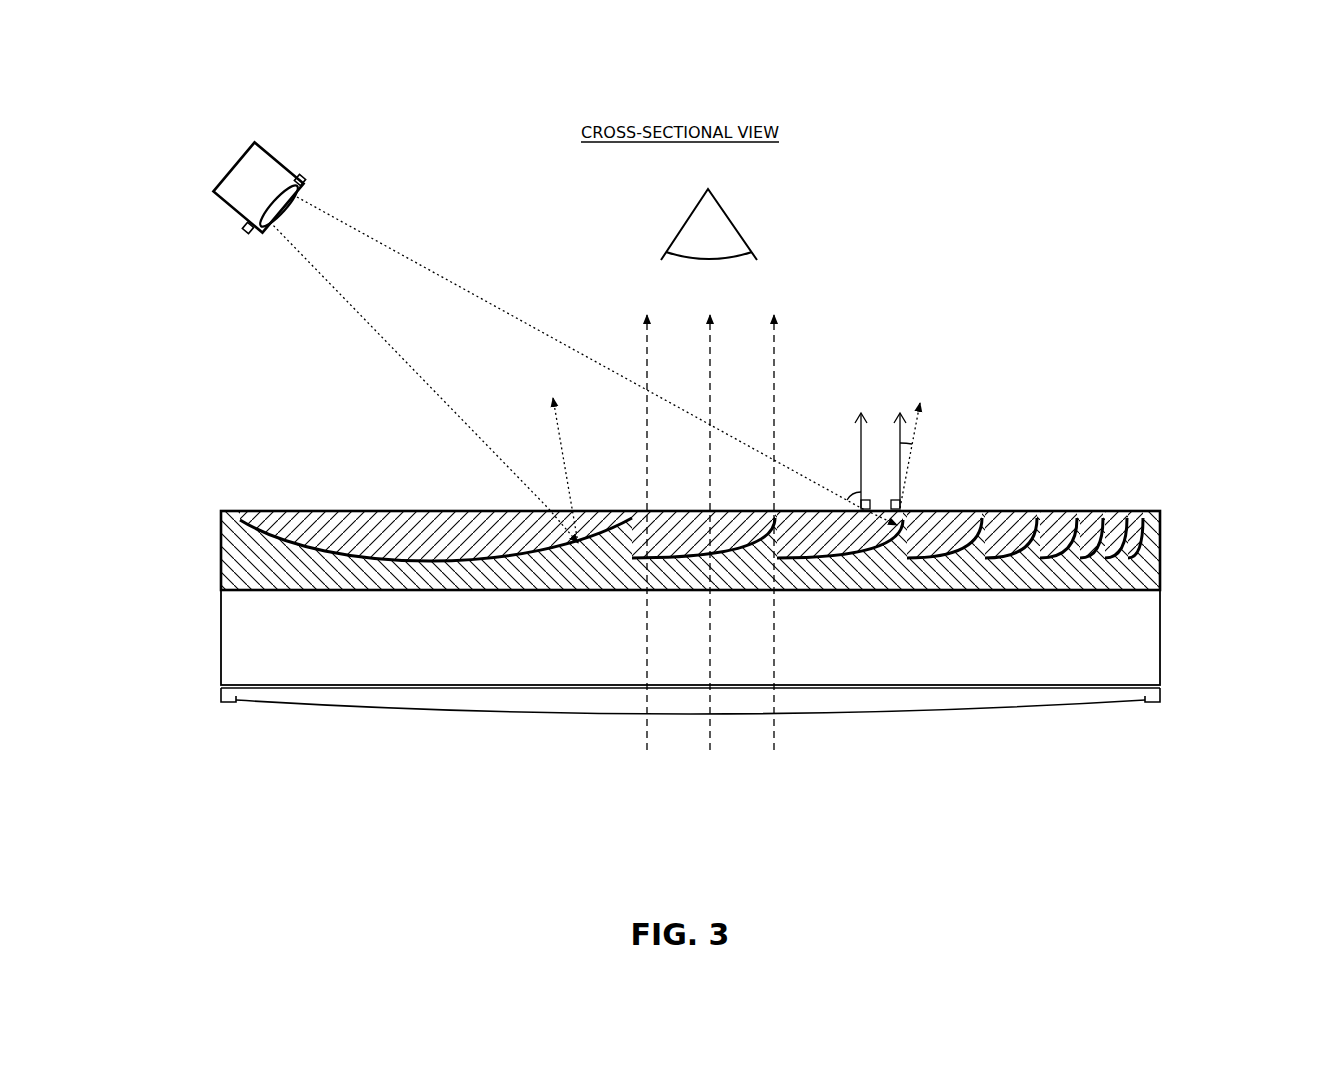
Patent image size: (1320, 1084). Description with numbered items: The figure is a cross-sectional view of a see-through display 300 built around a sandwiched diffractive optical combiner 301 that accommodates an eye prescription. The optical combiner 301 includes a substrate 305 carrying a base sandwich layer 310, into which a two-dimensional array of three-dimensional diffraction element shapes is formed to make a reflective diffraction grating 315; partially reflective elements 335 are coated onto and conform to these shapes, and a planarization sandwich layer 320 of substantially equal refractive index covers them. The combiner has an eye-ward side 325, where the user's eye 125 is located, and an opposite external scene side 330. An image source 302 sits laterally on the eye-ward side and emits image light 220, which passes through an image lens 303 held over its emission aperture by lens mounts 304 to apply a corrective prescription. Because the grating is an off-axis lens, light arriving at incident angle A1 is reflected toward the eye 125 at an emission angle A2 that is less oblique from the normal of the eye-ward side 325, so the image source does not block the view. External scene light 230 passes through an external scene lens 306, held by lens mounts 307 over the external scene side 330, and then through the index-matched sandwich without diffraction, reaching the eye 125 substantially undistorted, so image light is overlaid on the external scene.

The see-through display 300 is at (1049, 160).
The sandwiched diffractive optical combiner 301 is at (733, 577).
The image source 302 is at (237, 191).
The image lens 303 is at (300, 196).
The lens mounts 304 is at (302, 176).
The substrate 305 is at (378, 671).
The external scene lens 306 is at (428, 705).
The lens mounts 307 is at (230, 703).
The base sandwich layer 310 is at (254, 577).
The reflective diffraction grating 315 is at (307, 416).
The planarization sandwich layer 320 is at (436, 539).
The eye-ward side 325 is at (893, 304).
The external scene side 330 is at (889, 760).
The partially reflective elements 335 is at (388, 557).
The eye 125 is at (694, 243).
The image light 220 is at (351, 279).
The external scene light 230 is at (645, 760).
The incident angle A1 is at (852, 494).
The emission angle A2 is at (908, 437).